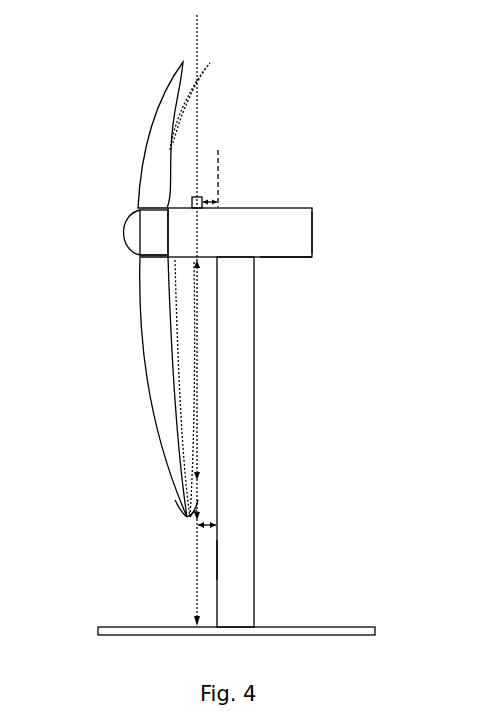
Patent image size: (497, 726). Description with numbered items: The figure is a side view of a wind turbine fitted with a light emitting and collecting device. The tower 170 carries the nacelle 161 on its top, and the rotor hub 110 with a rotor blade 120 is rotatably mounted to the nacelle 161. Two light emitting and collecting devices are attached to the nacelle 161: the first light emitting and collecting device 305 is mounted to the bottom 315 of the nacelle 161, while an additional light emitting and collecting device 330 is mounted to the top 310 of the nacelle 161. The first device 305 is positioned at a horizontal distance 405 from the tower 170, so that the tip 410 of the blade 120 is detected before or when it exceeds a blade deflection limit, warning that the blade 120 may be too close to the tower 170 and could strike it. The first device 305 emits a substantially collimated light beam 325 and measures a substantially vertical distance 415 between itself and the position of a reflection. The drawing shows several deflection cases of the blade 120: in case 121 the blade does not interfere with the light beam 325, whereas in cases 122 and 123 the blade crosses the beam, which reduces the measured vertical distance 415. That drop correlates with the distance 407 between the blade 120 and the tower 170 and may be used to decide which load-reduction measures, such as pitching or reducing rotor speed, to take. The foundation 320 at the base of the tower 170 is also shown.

The rotor hub 110 is at (132, 232).
The rotor blade 120 is at (155, 308).
The deflection case 121 is at (187, 512).
The deflection case 122 is at (197, 520).
The deflection case 123 is at (205, 500).
The nacelle 161 is at (303, 228).
The tower 170 is at (240, 590).
The first light emitting and collecting device 305 is at (168, 258).
The top of the nacelle 310 is at (298, 209).
The bottom of the nacelle 315 is at (298, 257).
The foundation 320 is at (365, 627).
The collimated light beam 325 is at (200, 33).
The additional light emitting and collecting device 330 is at (192, 200).
The horizontal distance 405 is at (210, 200).
The distance between blade and tower 407 is at (212, 530).
The blade tip 410 is at (178, 490).
The vertical distance 415 is at (218, 560).